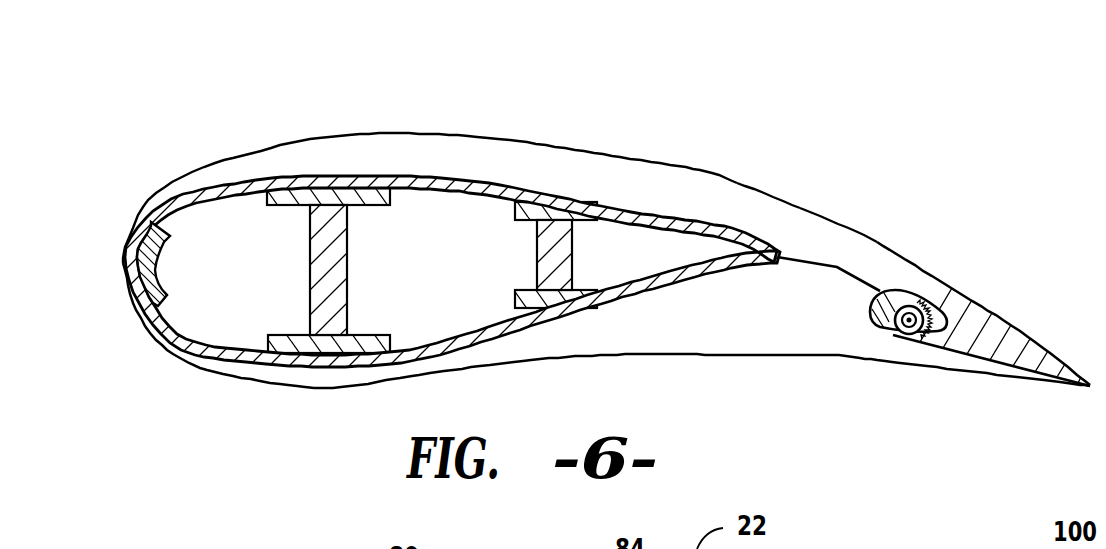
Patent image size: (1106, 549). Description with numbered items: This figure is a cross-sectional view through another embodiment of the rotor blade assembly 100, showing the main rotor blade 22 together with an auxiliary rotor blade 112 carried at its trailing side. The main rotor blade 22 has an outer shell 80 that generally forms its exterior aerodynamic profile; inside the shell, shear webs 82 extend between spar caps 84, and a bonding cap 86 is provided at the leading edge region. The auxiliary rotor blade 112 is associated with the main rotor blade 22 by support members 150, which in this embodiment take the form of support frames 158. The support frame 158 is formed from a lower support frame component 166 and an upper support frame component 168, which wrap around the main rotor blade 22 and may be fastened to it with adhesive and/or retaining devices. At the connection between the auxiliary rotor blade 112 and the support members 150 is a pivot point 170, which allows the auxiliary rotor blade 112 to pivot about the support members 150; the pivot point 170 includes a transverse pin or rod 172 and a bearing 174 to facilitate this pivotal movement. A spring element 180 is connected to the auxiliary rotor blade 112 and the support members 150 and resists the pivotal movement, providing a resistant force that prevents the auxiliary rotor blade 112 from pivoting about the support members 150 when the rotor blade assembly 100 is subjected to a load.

The main rotor blade 22 is at (433, 164).
The outer shell 80 is at (377, 173).
The shear web 82 is at (533, 247).
The spar caps 84 is at (287, 196).
The bonding cap 86 is at (150, 283).
The rotor blade assembly 100 is at (955, 177).
The auxiliary rotor blade 112 is at (1018, 336).
The support members 150 is at (749, 188).
The support frames 158 is at (812, 209).
The lower support frame component 166 is at (572, 342).
The upper support frame component 168 is at (612, 170).
The pivot point 170 is at (896, 335).
The transverse pins or rods 172 is at (908, 306).
The bearings 174 is at (888, 318).
The spring element 180 is at (937, 308).